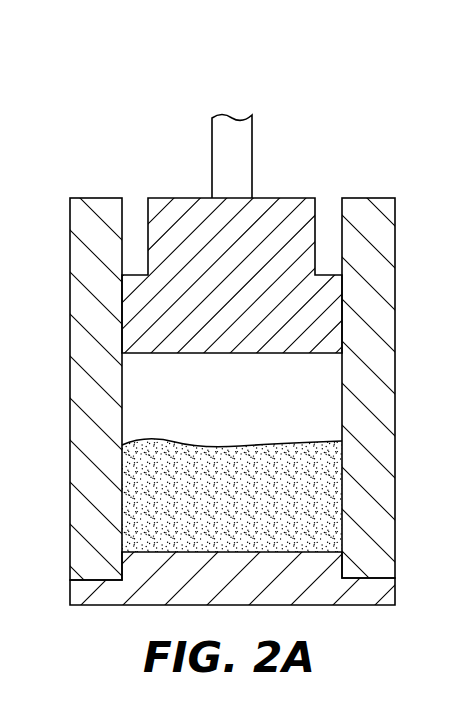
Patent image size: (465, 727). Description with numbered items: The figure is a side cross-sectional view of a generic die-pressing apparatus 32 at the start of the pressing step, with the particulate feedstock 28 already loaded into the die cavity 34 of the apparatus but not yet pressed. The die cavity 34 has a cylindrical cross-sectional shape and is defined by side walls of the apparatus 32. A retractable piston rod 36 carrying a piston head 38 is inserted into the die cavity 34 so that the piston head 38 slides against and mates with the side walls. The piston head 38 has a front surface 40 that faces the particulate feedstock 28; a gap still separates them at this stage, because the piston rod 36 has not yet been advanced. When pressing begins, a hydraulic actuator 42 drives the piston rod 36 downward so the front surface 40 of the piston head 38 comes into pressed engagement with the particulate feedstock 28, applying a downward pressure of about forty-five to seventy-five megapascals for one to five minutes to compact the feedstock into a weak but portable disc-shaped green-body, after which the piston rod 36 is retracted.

The particulate feedstock 28 is at (193, 466).
The die-pressing apparatus 32 is at (55, 241).
The die cavity 34 is at (343, 378).
The retractable piston rod 36 is at (331, 178).
The piston head 38 is at (332, 308).
The front surface 40 is at (251, 356).
The hydraulic actuator 42 is at (246, 137).